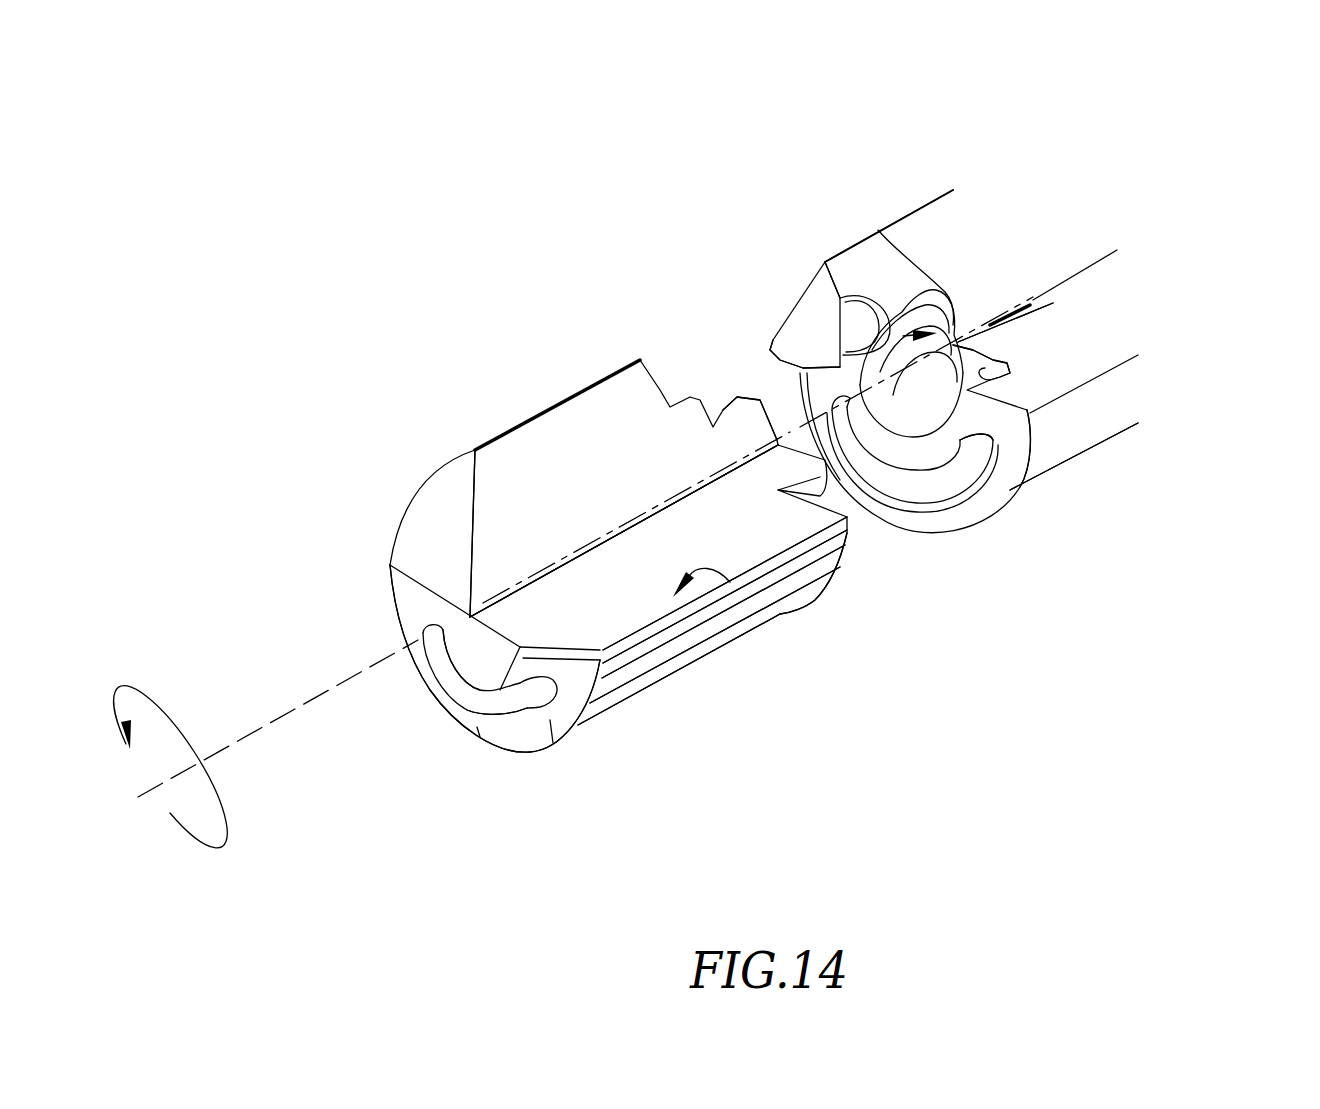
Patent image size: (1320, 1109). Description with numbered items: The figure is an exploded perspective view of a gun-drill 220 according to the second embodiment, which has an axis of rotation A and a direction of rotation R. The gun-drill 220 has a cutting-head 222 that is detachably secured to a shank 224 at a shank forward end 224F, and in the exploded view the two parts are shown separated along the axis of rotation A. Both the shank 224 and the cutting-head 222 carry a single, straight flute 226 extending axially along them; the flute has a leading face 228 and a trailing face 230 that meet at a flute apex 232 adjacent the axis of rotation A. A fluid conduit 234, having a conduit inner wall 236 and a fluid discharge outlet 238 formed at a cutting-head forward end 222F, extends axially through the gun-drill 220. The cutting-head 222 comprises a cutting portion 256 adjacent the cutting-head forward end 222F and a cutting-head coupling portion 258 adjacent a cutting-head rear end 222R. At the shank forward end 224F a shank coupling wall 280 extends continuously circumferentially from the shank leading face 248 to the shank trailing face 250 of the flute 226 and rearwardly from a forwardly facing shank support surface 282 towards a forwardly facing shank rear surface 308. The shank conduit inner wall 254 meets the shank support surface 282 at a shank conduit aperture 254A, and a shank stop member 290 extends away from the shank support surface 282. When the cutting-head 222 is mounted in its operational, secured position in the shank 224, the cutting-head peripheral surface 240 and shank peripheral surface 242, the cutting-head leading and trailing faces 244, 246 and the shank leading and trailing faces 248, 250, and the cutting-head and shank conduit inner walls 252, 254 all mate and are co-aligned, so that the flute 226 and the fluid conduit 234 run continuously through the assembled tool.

The gun-drill 220 is at (427, 147).
The cutting-head 222 is at (542, 410).
The cutting-head forward end 222F is at (417, 613).
The cutting-head rear end 222R is at (707, 397).
The shank 224 is at (1138, 152).
The shank forward end 224F is at (1010, 437).
The flute 226 is at (533, 483).
The leading face 228 is at (777, 605).
The trailing face 230 is at (583, 440).
The flute apex 232 is at (523, 587).
The fluid conduit 234 is at (493, 712).
The conduit inner wall 236 is at (513, 708).
The fluid discharge outlet 238 is at (435, 668).
The cutting-head peripheral surface 240 is at (790, 608).
The shank peripheral surface 242 is at (1043, 457).
The cutting-head leading face 244 is at (605, 622).
The cutting-head trailing face 246 is at (647, 420).
The shank leading face 248 is at (1047, 347).
The shank trailing face 250 is at (983, 290).
The cutting-head conduit inner wall 252 is at (568, 732).
The shank conduit inner wall 254 is at (935, 505).
The shank conduit aperture 254A is at (877, 512).
The cutting portion 256 is at (633, 677).
The cutting-head coupling portion 258 is at (745, 440).
The shank coupling wall 280 is at (877, 227).
The shank support surface 282 is at (983, 423).
The shank stop member 290 is at (810, 300).
The shank rear surface 308 is at (1040, 457).
The axis of rotation A is at (310, 698).
The direction of rotation R is at (171, 782).